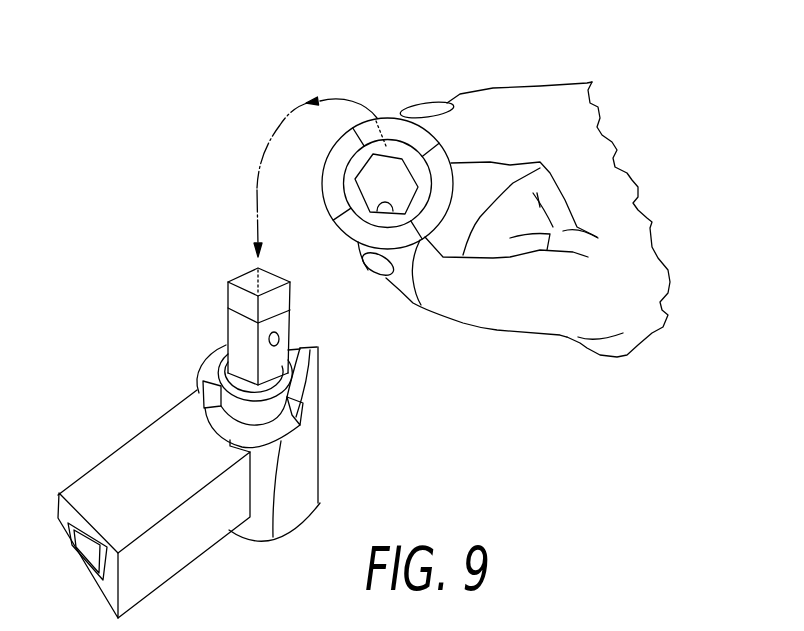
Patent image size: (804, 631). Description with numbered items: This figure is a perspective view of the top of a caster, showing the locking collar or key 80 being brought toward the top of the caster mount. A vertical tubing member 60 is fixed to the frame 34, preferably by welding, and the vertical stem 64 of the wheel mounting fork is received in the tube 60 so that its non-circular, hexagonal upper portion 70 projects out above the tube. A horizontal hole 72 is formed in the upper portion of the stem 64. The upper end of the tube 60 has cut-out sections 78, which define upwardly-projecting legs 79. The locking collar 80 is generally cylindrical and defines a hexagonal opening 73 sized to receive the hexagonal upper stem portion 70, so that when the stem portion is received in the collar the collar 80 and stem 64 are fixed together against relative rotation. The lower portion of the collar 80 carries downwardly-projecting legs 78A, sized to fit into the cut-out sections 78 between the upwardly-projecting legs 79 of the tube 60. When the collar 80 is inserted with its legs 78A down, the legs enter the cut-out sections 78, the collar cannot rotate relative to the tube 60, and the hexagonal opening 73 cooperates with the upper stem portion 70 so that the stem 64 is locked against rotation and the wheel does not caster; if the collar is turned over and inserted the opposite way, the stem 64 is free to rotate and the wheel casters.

The locking collar 80 is at (378, 96).
The downwardly-projecting legs 78A is at (377, 118).
The non-circular opening 73 is at (387, 147).
The non-circular cross-section upper portion 70 is at (227, 292).
The vertical stem 64 is at (218, 319).
The horizontal hole 72 is at (281, 335).
The upwardly-projecting legs 79 is at (206, 357).
The frame 34 is at (137, 457).
The vertical tubing member 60 is at (303, 462).
The cut-out sections 78 is at (273, 540).